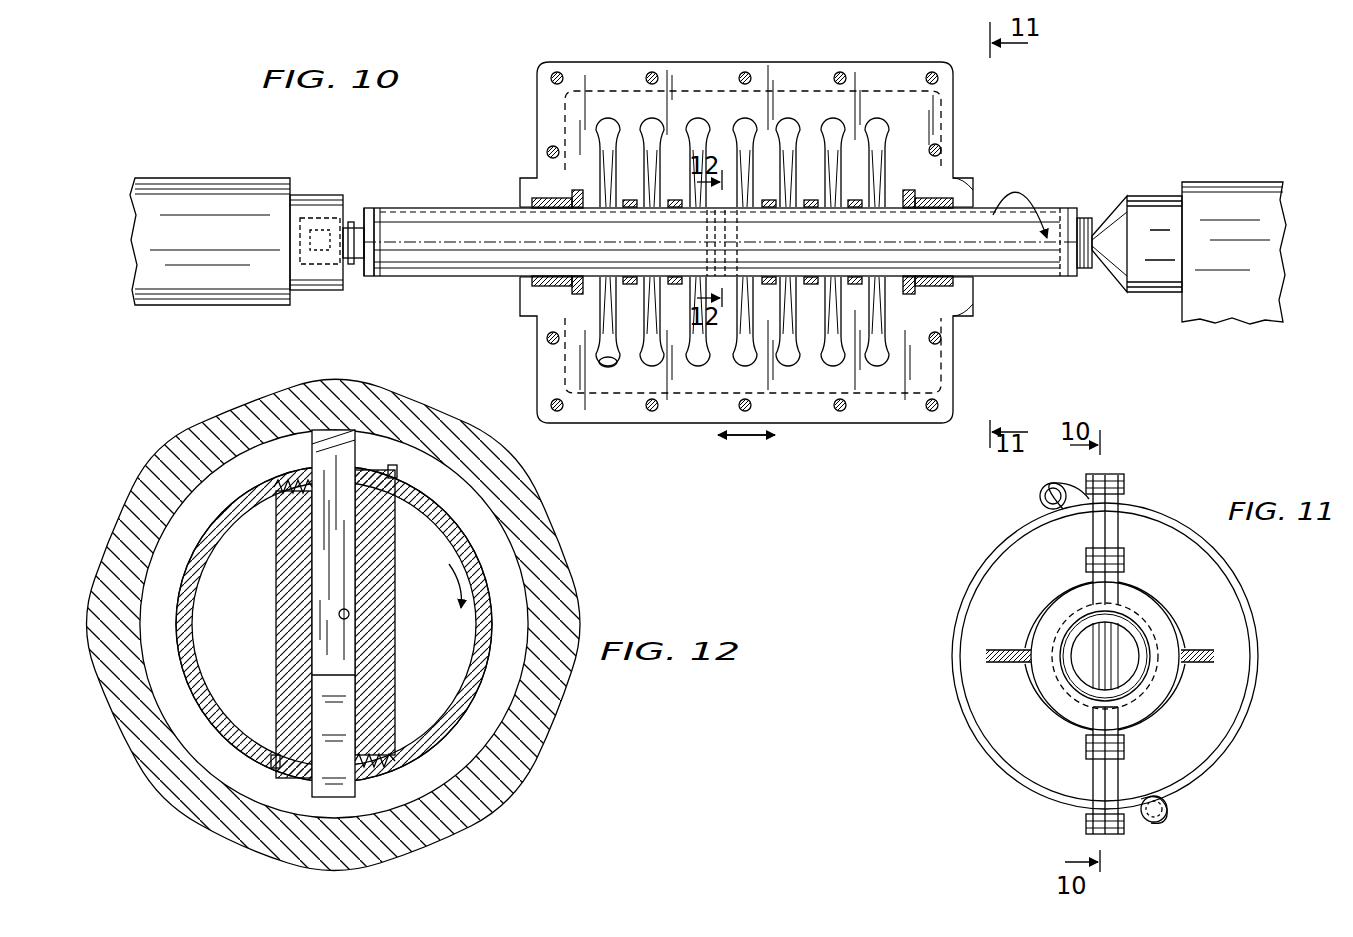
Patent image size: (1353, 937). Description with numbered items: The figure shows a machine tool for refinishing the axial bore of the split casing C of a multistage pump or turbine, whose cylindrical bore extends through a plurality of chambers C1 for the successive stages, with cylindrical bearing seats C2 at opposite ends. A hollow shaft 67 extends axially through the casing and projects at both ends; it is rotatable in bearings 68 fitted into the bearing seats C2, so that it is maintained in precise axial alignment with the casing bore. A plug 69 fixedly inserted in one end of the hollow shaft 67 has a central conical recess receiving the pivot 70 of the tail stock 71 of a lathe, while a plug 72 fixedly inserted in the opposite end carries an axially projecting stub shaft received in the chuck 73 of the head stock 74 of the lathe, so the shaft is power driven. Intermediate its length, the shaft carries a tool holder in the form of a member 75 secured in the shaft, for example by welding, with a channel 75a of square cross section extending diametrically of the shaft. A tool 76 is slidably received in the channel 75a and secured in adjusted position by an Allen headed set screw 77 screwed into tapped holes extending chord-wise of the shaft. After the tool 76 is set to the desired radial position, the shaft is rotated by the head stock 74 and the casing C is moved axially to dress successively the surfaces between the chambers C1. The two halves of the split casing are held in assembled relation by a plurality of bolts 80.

In FIG. 10, the head stock 74 is at (185, 178).
In FIG. 10, the chuck 73 is at (316, 195).
In FIG. 10, the plug 72 is at (366, 208).
In FIG. 10, the hollow shaft 67 is at (452, 208).
In FIG. 11, the hollow shaft 67 is at (1131, 680).
In FIG. 10, the bearings 68 is at (538, 284).
In FIG. 11, the bearings 68 is at (1086, 620).
In FIG. 10, the plug 69 is at (1085, 218).
In FIG. 10, the pivot 70 is at (1105, 238).
In FIG. 10, the tail stock 71 is at (1265, 245).
In FIG. 10, the tool holder member 75 is at (737, 236).
In FIG. 11, the tool holder member 75 is at (1096, 658).
In FIG. 12, the tool holder member 75 is at (357, 675).
In FIG. 12, the channel 75a is at (349, 616).
In FIG. 12, the tool 76 is at (325, 566).
In FIG. 12, the set screw 77 is at (380, 762).
In FIG. 10, the bolts 80 is at (942, 146).
In FIG. 11, the bolts 80 is at (1126, 560).
In FIG. 10, the split casing C is at (848, 423).
In FIG. 11, the split casing C is at (1226, 744).
In FIG. 12, the split casing C is at (334, 624).
In FIG. 10, the chambers C1 is at (833, 113).
In FIG. 10, the bearing seats C2 is at (532, 200).
In FIG. 11, the bearing seats C2 is at (1063, 640).